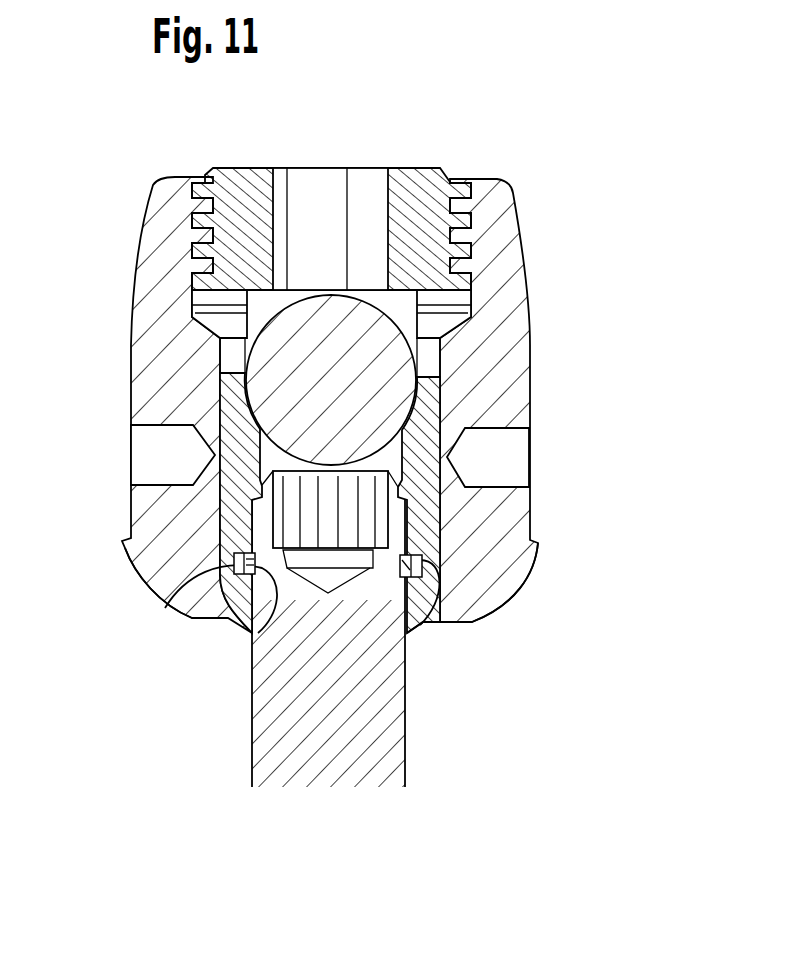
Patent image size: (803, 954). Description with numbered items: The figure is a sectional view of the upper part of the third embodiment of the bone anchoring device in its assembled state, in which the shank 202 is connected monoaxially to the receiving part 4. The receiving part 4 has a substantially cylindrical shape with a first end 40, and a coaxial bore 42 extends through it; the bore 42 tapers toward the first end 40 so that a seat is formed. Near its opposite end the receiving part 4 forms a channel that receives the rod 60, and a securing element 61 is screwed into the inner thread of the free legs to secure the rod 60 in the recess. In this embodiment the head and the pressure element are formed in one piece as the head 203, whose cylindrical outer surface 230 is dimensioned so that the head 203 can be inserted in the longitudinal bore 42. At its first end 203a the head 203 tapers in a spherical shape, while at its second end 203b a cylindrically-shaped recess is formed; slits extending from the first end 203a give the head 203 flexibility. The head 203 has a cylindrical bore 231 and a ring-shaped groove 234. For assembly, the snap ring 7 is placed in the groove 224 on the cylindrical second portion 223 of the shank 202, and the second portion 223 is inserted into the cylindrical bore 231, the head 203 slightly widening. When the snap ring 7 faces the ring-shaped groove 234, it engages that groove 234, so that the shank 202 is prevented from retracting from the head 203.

The receiving part 4 is at (527, 266).
The snap ring 7 is at (422, 563).
The first end 40 is at (458, 621).
The coaxial bore 42 is at (435, 365).
The rod 60 is at (309, 320).
The securing element 61 is at (409, 187).
The shank 202 is at (405, 780).
The head 203 is at (237, 463).
The first end 203a is at (408, 630).
The second end 203b is at (237, 374).
The cylindrical second portion 223 is at (273, 683).
The groove 224 is at (255, 643).
The cylindrical outer surface 230 is at (440, 525).
The cylindrical bore 231 is at (243, 525).
The ring-shaped groove 234 is at (235, 563).